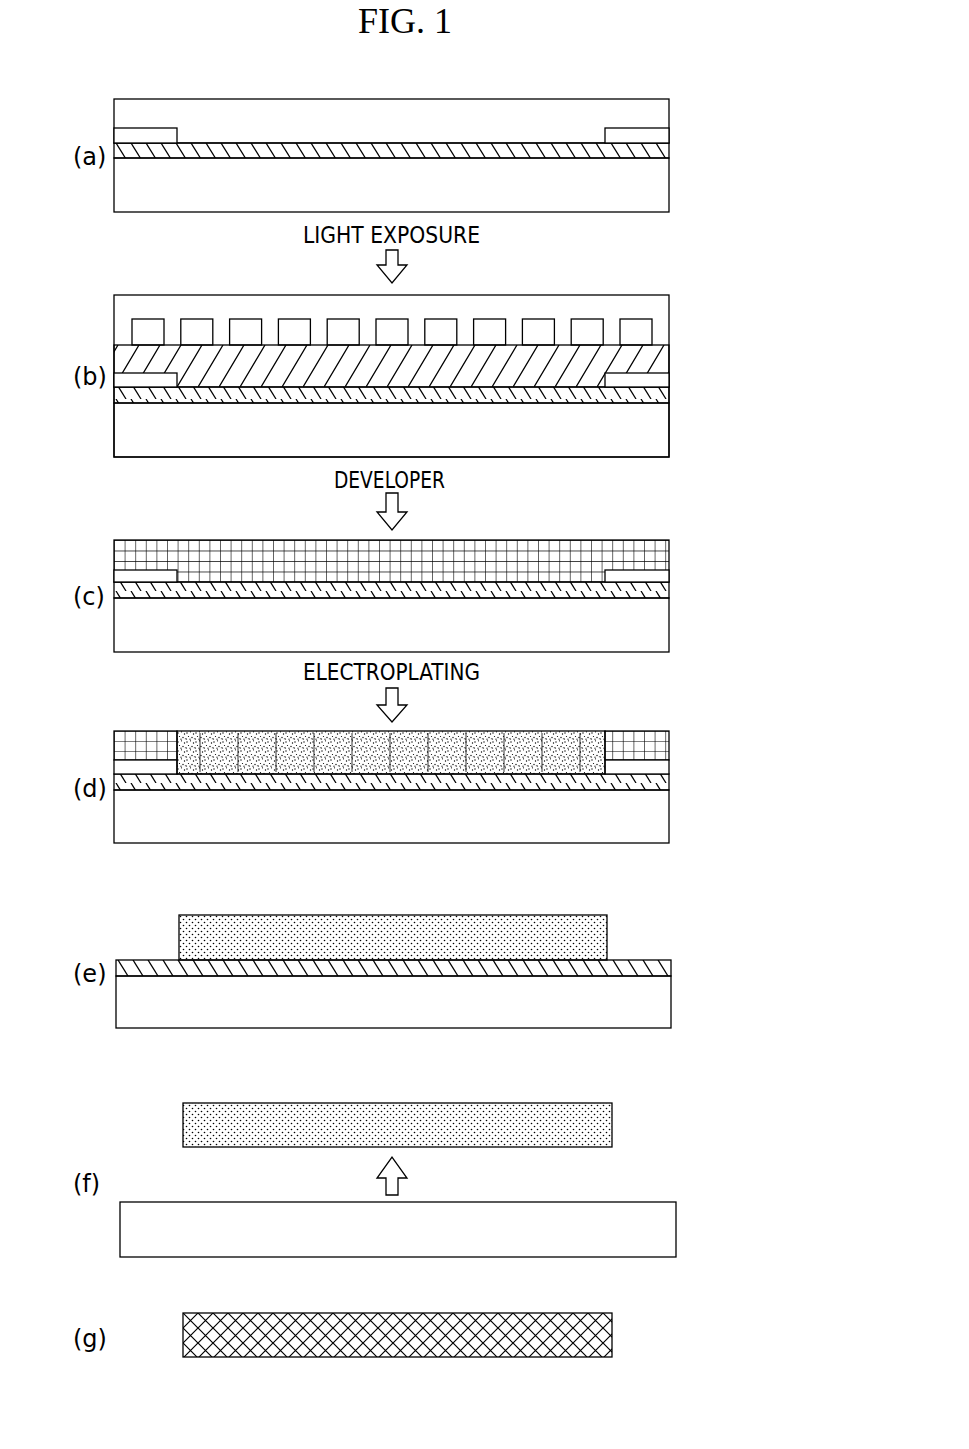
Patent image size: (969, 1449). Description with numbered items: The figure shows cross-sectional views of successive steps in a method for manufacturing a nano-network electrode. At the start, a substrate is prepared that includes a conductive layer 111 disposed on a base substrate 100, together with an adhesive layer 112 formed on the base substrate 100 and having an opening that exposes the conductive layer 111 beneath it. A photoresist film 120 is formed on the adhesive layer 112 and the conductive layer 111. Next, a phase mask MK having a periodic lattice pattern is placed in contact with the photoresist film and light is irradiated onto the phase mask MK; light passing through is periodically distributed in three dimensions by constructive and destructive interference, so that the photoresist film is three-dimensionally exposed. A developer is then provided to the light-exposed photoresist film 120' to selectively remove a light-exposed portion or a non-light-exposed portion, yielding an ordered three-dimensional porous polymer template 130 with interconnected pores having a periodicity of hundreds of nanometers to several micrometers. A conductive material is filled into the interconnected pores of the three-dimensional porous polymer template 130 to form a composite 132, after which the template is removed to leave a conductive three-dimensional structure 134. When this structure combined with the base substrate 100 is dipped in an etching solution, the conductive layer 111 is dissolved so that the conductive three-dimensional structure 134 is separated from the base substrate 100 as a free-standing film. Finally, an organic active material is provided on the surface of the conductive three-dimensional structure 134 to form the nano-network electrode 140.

The base substrate 100 is at (669, 195).
The conductive layer 111 is at (669, 152).
The adhesive layer 112 is at (669, 133).
The photoresist film 120 is at (429, 121).
The light-exposed photoresist film 120' is at (432, 364).
The phase mask MK is at (669, 322).
The three-dimensional porous polymer template 130 is at (669, 552).
The composite 132 is at (560, 740).
The conductive three-dimensional structure 134 is at (565, 920).
The nano-network electrode 140 is at (612, 1345).